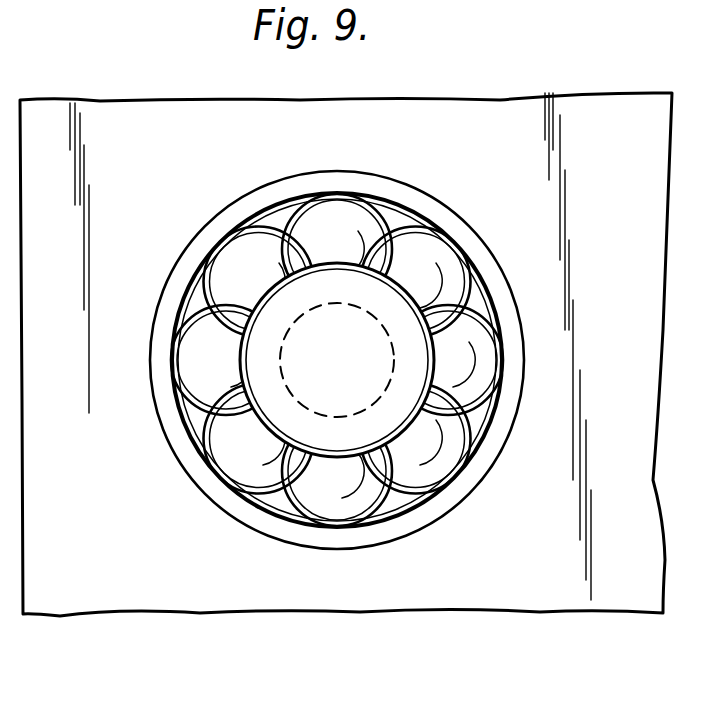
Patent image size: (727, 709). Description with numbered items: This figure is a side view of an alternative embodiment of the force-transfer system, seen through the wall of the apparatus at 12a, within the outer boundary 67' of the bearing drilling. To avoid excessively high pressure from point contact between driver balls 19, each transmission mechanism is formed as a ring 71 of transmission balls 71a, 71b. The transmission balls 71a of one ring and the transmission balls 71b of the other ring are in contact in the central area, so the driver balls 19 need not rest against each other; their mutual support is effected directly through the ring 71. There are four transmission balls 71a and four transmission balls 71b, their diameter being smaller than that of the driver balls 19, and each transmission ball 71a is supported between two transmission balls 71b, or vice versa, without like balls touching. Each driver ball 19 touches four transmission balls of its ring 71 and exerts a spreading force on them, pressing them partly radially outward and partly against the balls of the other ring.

The plate / housing wall 12a is at (108, 122).
The outer housing ring 67' is at (395, 360).
The ring 71 is at (407, 209).
The transmission balls 71a is at (327, 233).
The transmission balls 71b is at (226, 232).
The driver ball 19 is at (325, 360).